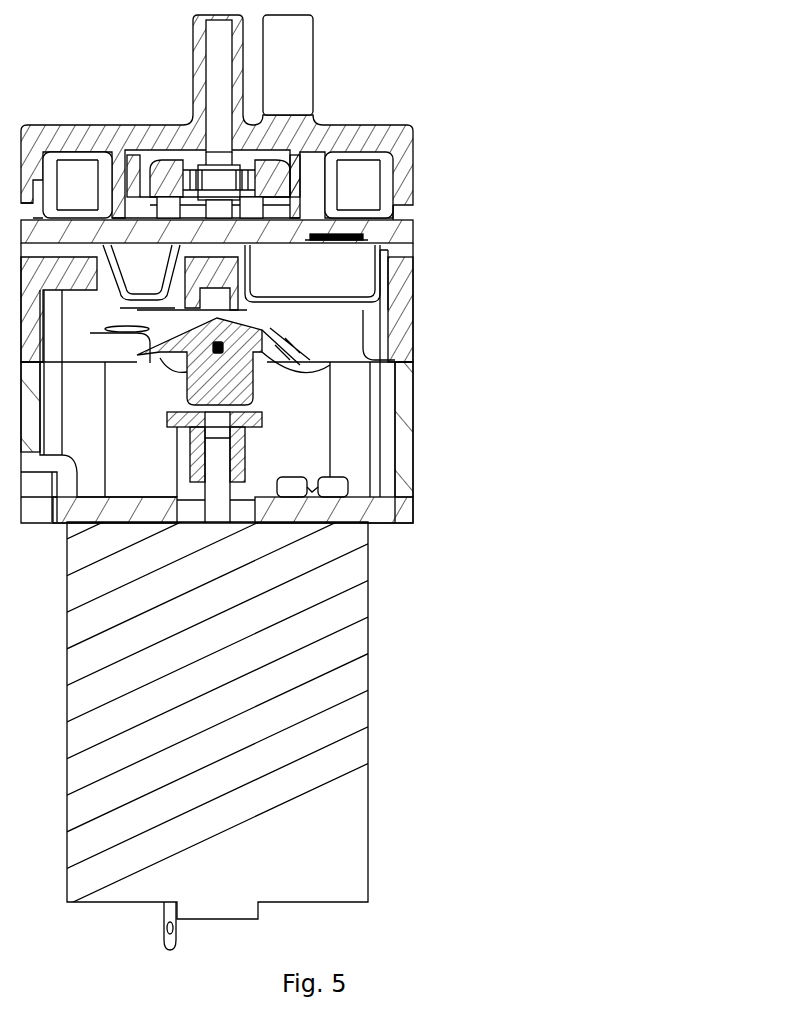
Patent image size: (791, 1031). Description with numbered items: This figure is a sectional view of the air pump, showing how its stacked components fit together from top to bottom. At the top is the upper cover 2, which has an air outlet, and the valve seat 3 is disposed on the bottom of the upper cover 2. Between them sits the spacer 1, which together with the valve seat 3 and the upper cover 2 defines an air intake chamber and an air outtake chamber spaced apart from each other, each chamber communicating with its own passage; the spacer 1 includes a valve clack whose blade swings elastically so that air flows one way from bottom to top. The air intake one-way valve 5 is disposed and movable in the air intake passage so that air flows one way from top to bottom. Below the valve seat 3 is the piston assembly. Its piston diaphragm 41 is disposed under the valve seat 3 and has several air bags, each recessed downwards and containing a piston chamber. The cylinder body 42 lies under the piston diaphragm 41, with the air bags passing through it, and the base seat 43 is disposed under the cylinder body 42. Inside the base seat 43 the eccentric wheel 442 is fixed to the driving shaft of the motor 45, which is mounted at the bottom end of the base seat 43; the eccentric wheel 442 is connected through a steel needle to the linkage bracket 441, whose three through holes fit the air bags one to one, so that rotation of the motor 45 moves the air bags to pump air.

The spacer 1 is at (298, 197).
The upper cover 2 is at (262, 200).
The valve seat 3 is at (410, 207).
The air intake one-way valve 5 is at (345, 236).
The piston diaphragm 41 is at (387, 282).
The cylinder body 42 is at (405, 317).
The linkage bracket 441 is at (263, 382).
The eccentric wheel 442 is at (205, 474).
The base seat 43 is at (167, 525).
The motor 45 is at (222, 722).